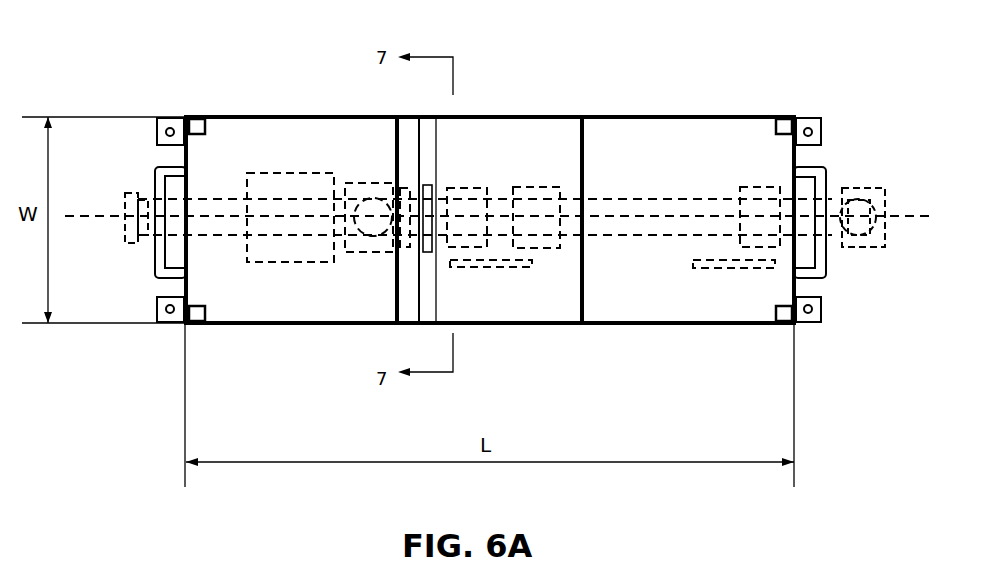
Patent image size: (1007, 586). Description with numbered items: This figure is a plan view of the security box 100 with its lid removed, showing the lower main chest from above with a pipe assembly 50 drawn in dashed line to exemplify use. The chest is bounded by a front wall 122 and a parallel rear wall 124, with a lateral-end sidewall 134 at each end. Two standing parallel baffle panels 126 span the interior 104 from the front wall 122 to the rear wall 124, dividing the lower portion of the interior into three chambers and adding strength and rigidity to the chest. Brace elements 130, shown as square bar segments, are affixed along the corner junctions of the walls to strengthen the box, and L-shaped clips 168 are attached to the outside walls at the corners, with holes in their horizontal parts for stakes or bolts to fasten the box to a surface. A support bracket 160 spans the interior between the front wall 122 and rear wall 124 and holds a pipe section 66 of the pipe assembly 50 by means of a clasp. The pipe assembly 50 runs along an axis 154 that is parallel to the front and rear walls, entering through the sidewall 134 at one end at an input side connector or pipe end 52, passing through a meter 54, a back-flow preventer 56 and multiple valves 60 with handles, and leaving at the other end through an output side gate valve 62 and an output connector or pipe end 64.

The security box 100 is at (571, 78).
The interior 104 is at (318, 134).
The front wall 122 is at (555, 325).
The rear wall 124 is at (688, 115).
The baffle panel 126 is at (393, 137).
The brace element 130 is at (214, 117).
The sidewall 134 is at (795, 190).
The axis 154 is at (72, 218).
The support bracket 160 is at (427, 278).
The clip 168 is at (155, 118).
The pipe assembly 50 is at (673, 189).
The input side connector or pipe end 52 is at (123, 195).
The meter 54 is at (275, 172).
The back-flow preventer 56 is at (535, 187).
The valve 60 is at (467, 268).
The output side gate valve 62 is at (855, 245).
The output connector or pipe end 64 is at (885, 202).
The pipe section 66 is at (433, 203).